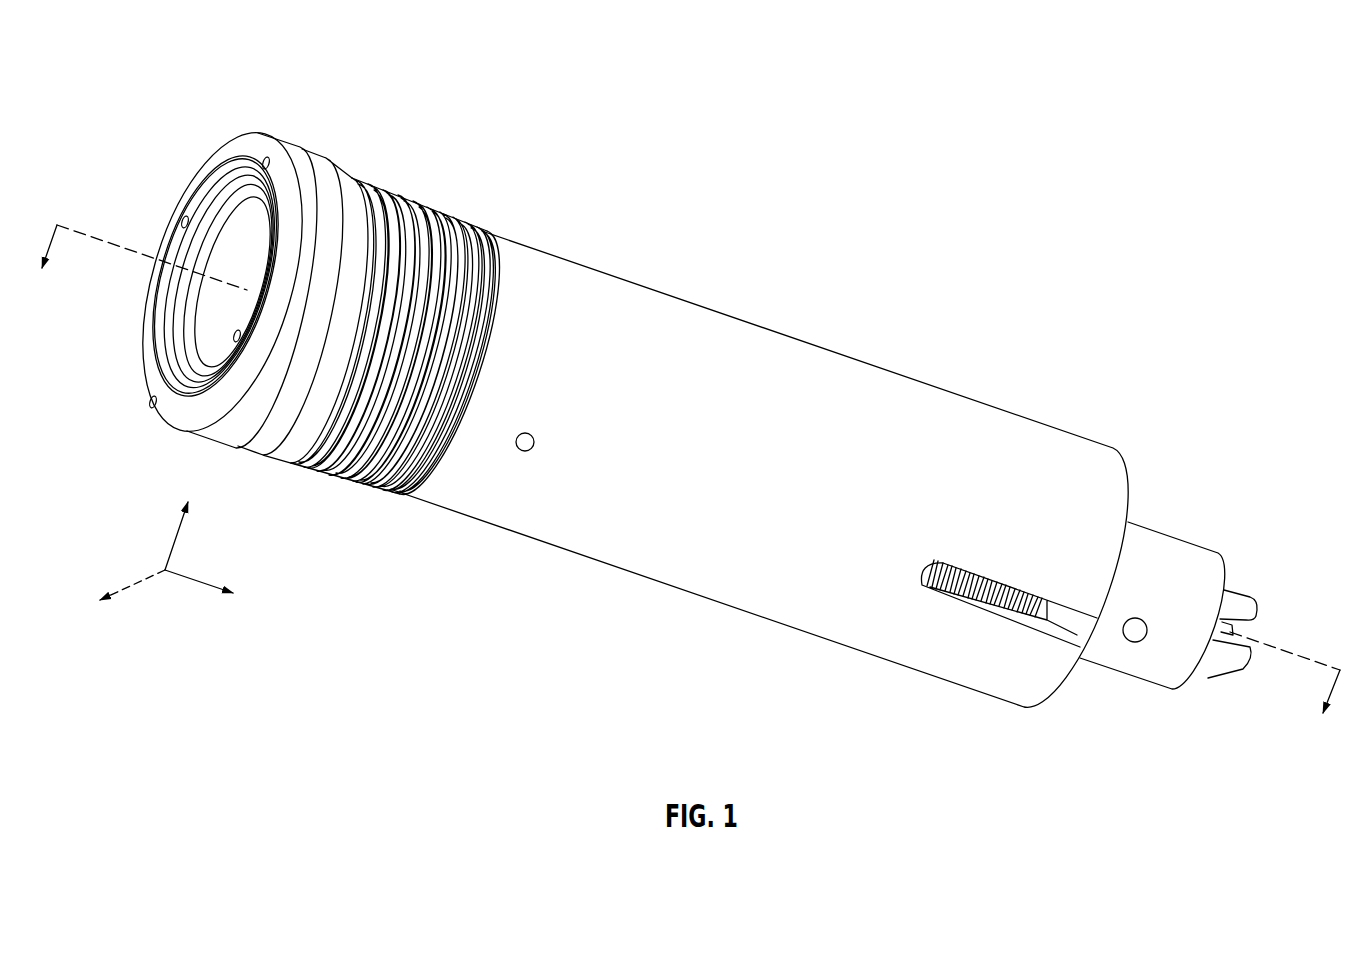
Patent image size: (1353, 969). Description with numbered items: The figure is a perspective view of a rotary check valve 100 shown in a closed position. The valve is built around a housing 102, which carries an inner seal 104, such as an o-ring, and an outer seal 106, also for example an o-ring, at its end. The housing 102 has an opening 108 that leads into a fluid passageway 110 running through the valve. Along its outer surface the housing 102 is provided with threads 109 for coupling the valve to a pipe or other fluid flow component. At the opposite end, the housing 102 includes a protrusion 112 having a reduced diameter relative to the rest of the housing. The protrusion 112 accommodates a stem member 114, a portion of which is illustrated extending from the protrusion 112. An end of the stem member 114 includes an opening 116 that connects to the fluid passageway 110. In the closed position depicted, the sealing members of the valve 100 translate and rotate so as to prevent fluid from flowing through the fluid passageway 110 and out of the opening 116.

The rotary check valve 100 is at (186, 97).
The housing 102 is at (797, 338).
The inner seal 104 is at (228, 210).
The outer seal 106 is at (313, 155).
The opening 108 is at (167, 220).
The threads 109 is at (423, 195).
The fluid passageway 110 is at (215, 343).
The protrusion 112 is at (1123, 677).
The stem member 114 is at (1207, 677).
The opening 116 is at (1258, 628).